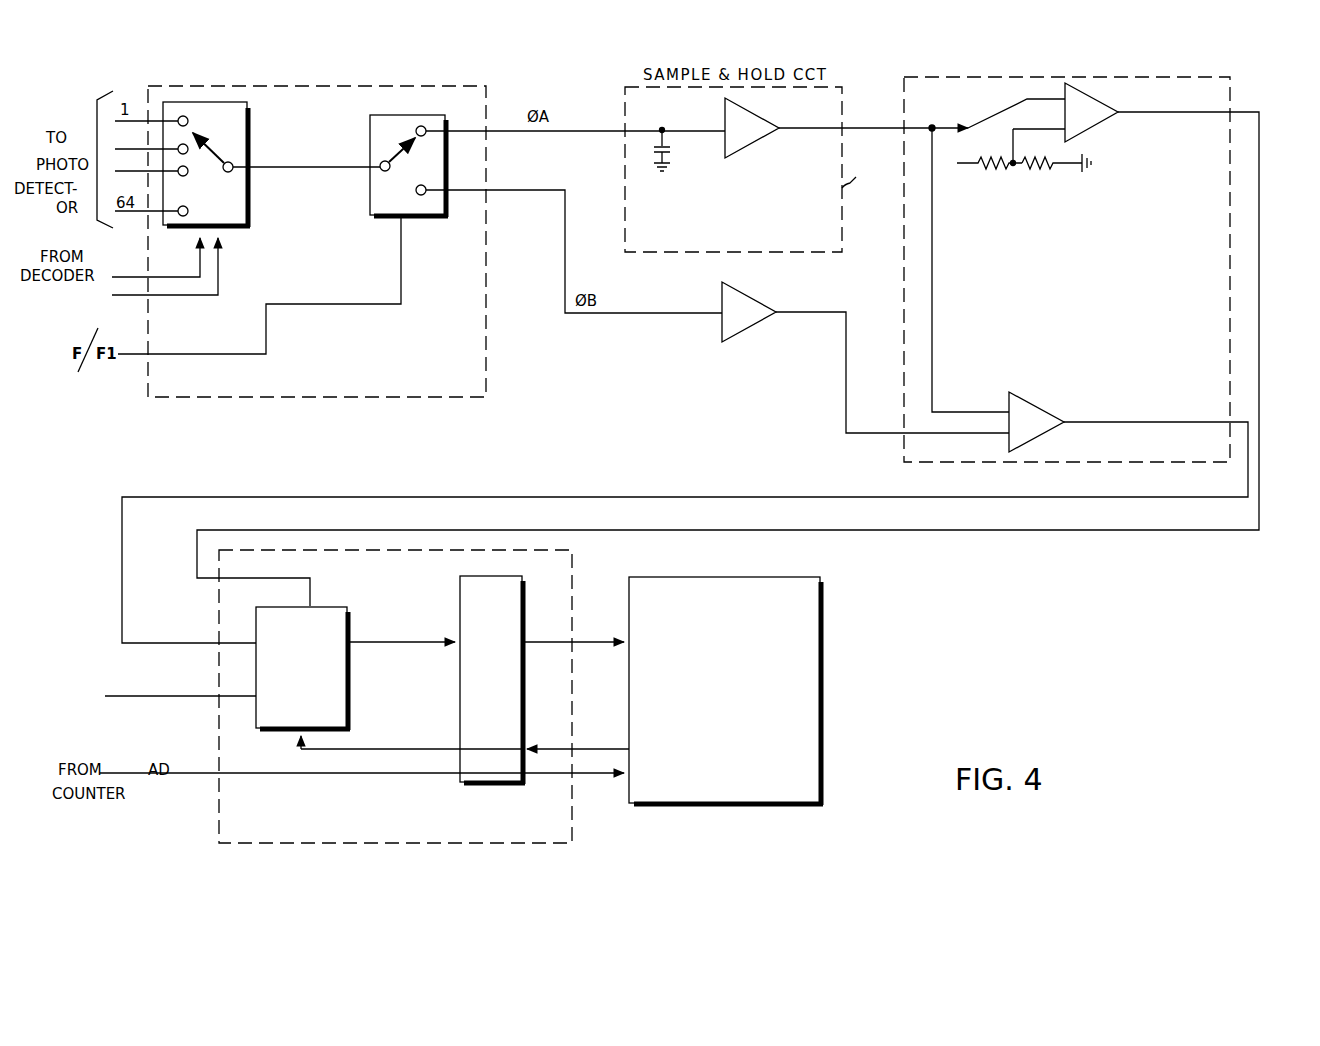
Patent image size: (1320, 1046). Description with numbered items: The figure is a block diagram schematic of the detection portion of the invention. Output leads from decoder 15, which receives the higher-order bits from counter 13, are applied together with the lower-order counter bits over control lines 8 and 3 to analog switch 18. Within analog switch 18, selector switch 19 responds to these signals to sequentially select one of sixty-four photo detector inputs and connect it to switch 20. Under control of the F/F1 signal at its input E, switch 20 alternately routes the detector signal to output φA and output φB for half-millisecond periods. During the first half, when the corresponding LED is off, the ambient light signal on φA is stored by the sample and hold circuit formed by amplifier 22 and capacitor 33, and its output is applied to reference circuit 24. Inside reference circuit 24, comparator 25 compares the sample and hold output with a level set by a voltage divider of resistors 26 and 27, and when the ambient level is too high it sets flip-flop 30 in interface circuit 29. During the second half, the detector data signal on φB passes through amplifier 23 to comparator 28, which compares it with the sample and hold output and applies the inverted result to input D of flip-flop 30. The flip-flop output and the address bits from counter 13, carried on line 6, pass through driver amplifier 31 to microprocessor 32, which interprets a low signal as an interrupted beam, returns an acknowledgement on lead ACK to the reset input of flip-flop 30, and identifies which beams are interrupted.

The analog switch 18 is at (297, 86).
The selector switch 19 is at (249, 135).
The switch 20 is at (433, 217).
The decoder control line 8 is at (163, 277).
The decoder control line 3 is at (185, 297).
The decoder 15 is at (53, 295).
The amplifier 22 is at (762, 140).
The capacitor 33 is at (683, 148).
The amplifier 23 is at (748, 325).
The reference circuit 24 is at (1133, 78).
The comparator 25 is at (1105, 100).
The resistor 26 is at (998, 168).
The resistor 27 is at (1052, 168).
The comparator 28 is at (1045, 412).
The interface circuit 29 is at (572, 565).
The flip-flop 30 is at (338, 606).
The driver amplifier 31 is at (510, 784).
The microprocessor 32 is at (820, 591).
The AD counter line 6 is at (380, 773).
The counter 13 is at (107, 816).